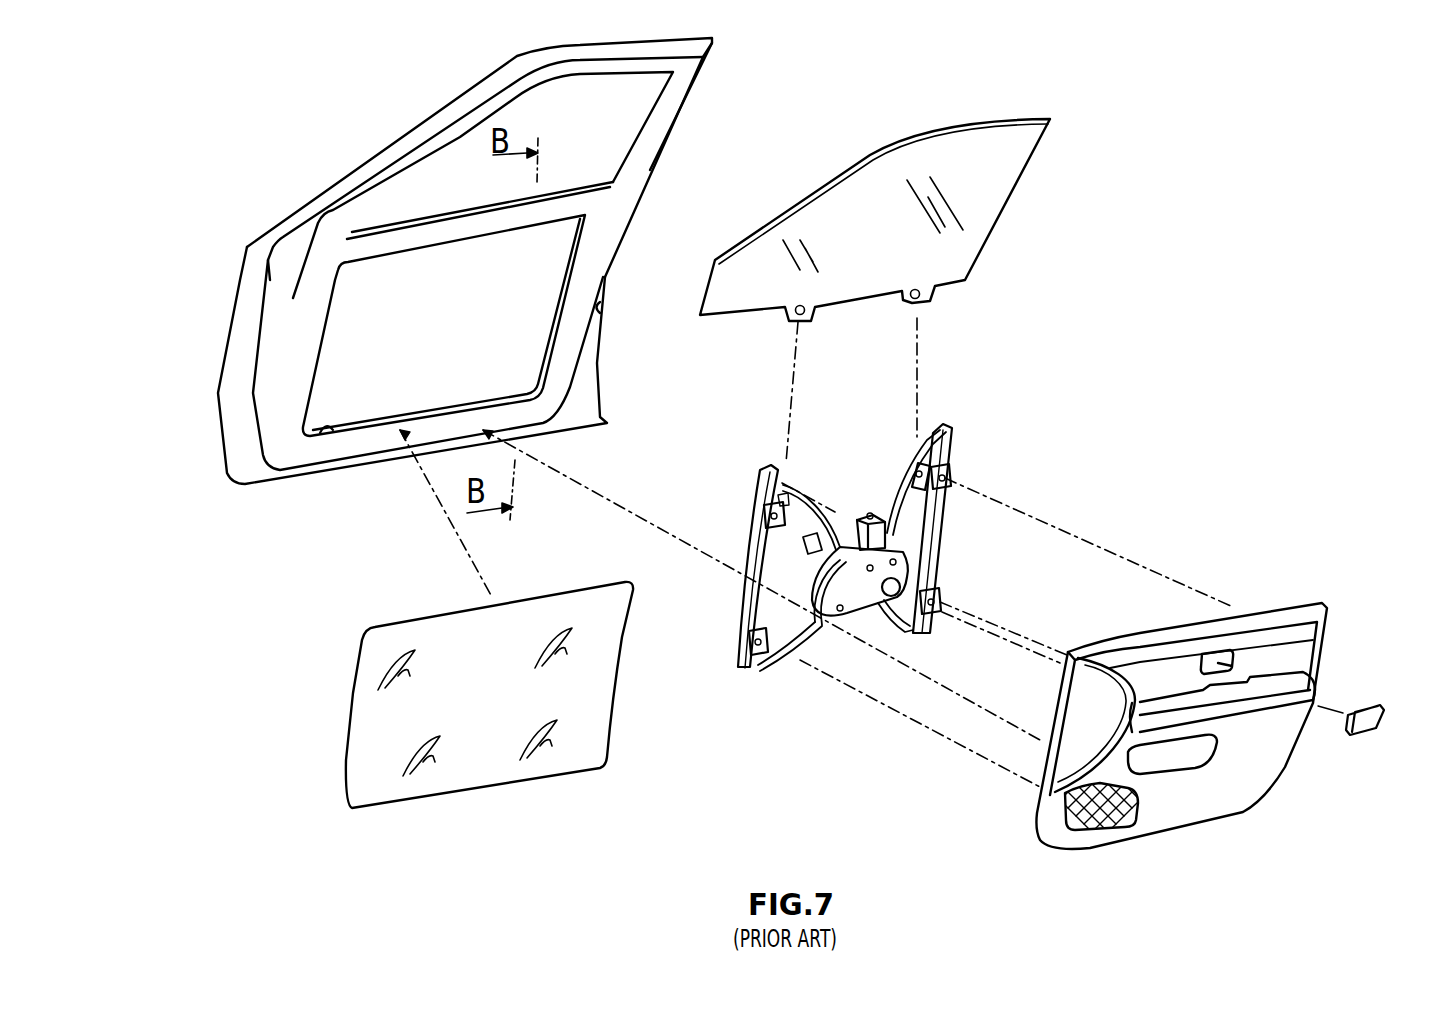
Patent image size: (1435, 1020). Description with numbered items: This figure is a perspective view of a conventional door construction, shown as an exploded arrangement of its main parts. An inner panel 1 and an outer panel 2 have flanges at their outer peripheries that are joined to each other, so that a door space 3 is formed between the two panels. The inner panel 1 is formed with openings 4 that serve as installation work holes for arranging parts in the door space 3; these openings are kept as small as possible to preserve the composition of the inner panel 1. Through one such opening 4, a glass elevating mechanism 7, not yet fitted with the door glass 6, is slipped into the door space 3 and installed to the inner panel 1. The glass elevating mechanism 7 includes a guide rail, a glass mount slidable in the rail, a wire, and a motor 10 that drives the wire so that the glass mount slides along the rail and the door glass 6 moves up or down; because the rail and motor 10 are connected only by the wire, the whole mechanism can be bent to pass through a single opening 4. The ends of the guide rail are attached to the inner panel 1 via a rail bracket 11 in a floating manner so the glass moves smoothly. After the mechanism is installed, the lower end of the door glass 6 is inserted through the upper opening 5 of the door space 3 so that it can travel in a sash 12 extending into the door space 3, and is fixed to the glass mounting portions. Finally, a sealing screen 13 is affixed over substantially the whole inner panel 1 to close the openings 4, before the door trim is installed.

The inner panel 1 is at (252, 460).
The outer panel 2 is at (218, 392).
The door space 3 is at (336, 433).
The openings 4 is at (1260, 783).
The upper opening 5 is at (980, 223).
The door glass 6 is at (885, 542).
The glass elevating mechanism 7 is at (1373, 706).
The motor 10 is at (763, 465).
The rail bracket 11 is at (863, 600).
The sash 12 is at (890, 485).
The sealing screen 13 is at (582, 752).